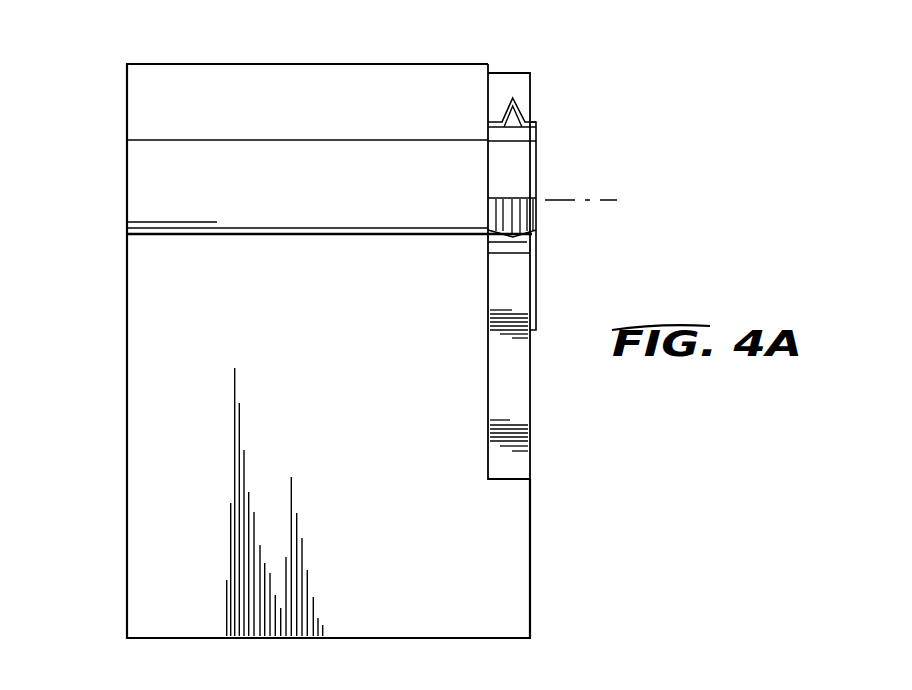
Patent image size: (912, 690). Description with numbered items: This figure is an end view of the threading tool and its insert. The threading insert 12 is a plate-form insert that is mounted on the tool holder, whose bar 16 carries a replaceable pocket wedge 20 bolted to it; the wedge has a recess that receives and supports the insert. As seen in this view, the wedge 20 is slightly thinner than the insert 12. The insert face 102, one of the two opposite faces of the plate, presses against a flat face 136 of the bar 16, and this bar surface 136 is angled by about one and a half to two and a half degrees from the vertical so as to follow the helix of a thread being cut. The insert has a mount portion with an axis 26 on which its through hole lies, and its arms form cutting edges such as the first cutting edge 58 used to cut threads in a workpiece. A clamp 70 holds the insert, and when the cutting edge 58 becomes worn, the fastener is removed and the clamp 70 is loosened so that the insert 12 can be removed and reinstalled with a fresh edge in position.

The bar 16 is at (125, 155).
The insert face 102 is at (488, 180).
The threading insert 12 is at (538, 147).
The clamp 70 is at (531, 91).
The flat face of the bar 136 is at (488, 167).
The first cutting edge 58 is at (506, 199).
The axis 26 is at (596, 203).
The replaceable pocket wedge 20 is at (531, 434).